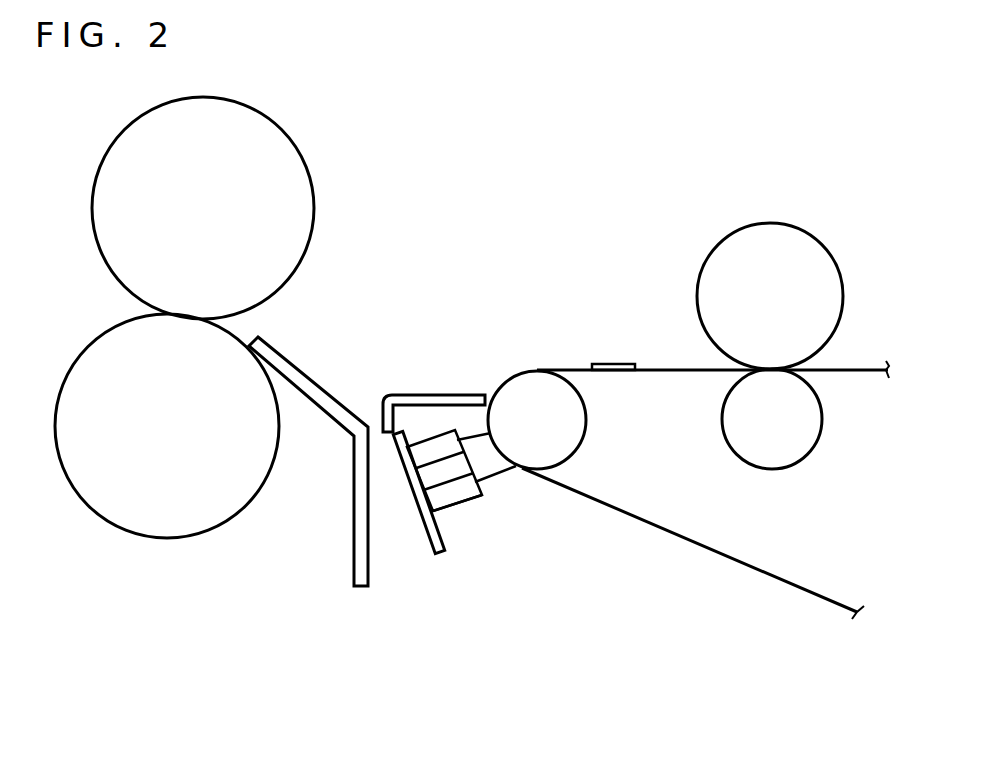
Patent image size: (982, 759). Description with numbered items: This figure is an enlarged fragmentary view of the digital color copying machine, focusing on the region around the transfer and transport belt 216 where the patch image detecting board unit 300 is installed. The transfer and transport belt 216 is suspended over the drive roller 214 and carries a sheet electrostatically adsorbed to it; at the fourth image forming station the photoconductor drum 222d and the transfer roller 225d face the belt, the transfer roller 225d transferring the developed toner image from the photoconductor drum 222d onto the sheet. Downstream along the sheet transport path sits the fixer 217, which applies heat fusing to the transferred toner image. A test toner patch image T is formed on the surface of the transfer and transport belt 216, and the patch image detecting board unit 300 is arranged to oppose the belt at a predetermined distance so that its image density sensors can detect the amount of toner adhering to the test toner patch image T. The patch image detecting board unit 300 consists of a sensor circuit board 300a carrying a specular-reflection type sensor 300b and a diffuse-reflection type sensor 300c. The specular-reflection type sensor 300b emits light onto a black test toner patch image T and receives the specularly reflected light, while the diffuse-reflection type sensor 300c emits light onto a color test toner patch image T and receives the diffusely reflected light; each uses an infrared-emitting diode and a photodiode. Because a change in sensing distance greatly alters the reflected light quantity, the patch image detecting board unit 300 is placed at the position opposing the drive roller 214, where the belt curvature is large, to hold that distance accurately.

The fixer 217 is at (318, 272).
The drive roller 214 is at (562, 453).
The transfer and transport belt 216 is at (855, 370).
The test toner patch image T is at (611, 364).
The photoconductor drum 222d is at (747, 237).
The transfer roller 225d is at (798, 453).
The patch image detecting board unit 300 is at (460, 569).
The sensor circuit board 300a is at (440, 555).
The specular-reflection type sensor 300b is at (458, 457).
The diffuse-reflection type sensor 300c is at (422, 513).